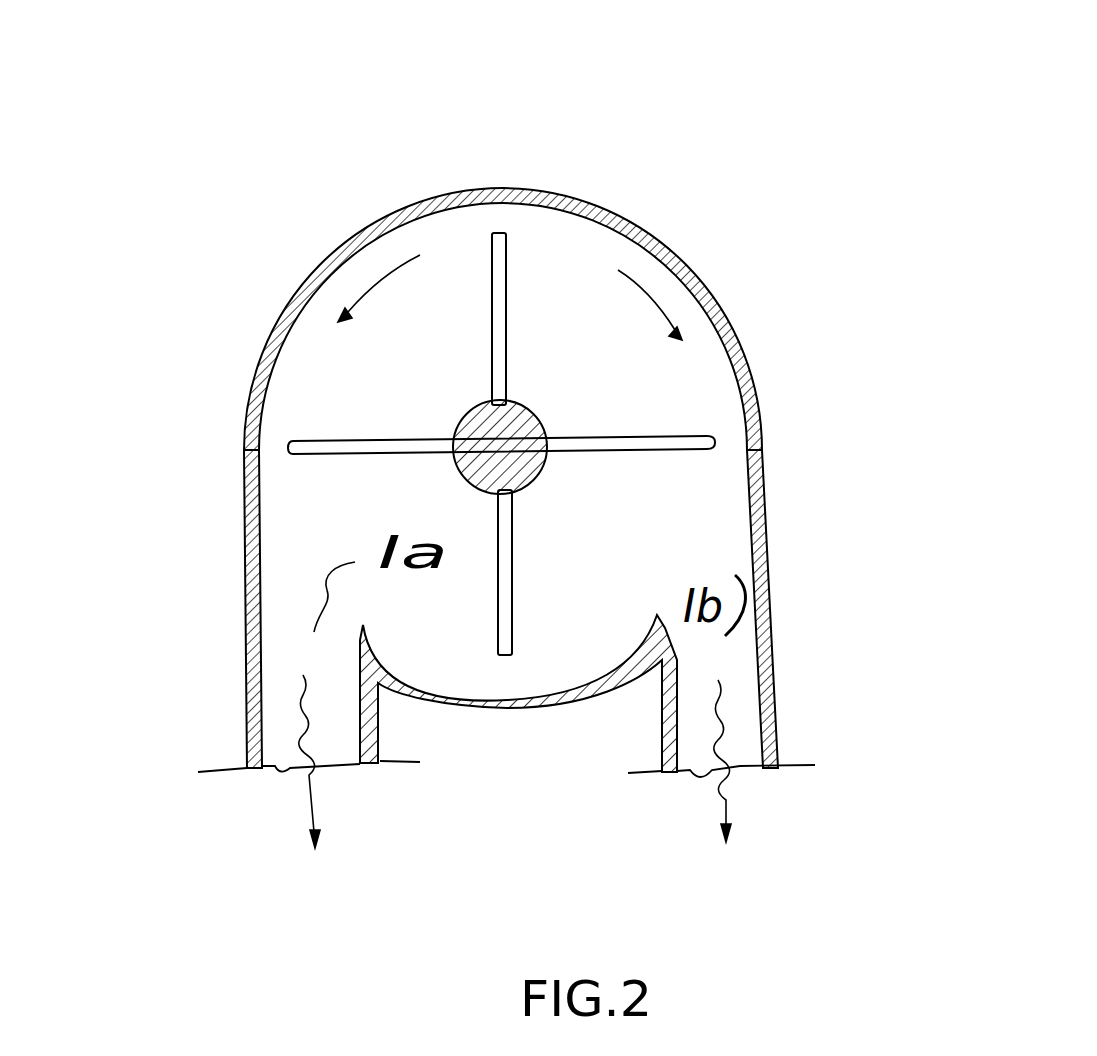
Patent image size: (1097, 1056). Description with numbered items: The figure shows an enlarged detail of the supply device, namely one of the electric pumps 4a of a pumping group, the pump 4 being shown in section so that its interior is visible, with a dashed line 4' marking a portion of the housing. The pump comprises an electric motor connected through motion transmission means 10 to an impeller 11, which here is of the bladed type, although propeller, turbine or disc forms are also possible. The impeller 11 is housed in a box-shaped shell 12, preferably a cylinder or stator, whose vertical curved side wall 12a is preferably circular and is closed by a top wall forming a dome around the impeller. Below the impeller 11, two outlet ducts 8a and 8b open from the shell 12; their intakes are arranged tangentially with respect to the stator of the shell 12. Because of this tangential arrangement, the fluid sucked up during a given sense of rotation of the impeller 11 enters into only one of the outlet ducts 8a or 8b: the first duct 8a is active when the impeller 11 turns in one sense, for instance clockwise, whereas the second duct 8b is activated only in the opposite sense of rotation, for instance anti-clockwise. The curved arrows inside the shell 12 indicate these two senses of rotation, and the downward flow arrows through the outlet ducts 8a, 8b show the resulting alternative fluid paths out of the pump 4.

The pump 4 is at (487, 384).
The housing right half 4' is at (790, 587).
The electric pump 4a is at (169, 564).
The outlet duct 8a is at (247, 722).
The outlet duct 8b is at (778, 706).
The motion transmission means 10 is at (501, 354).
The impeller 11 is at (540, 258).
The box-shaped shell 12 is at (310, 272).
The vertical curved side wall 12a is at (243, 552).